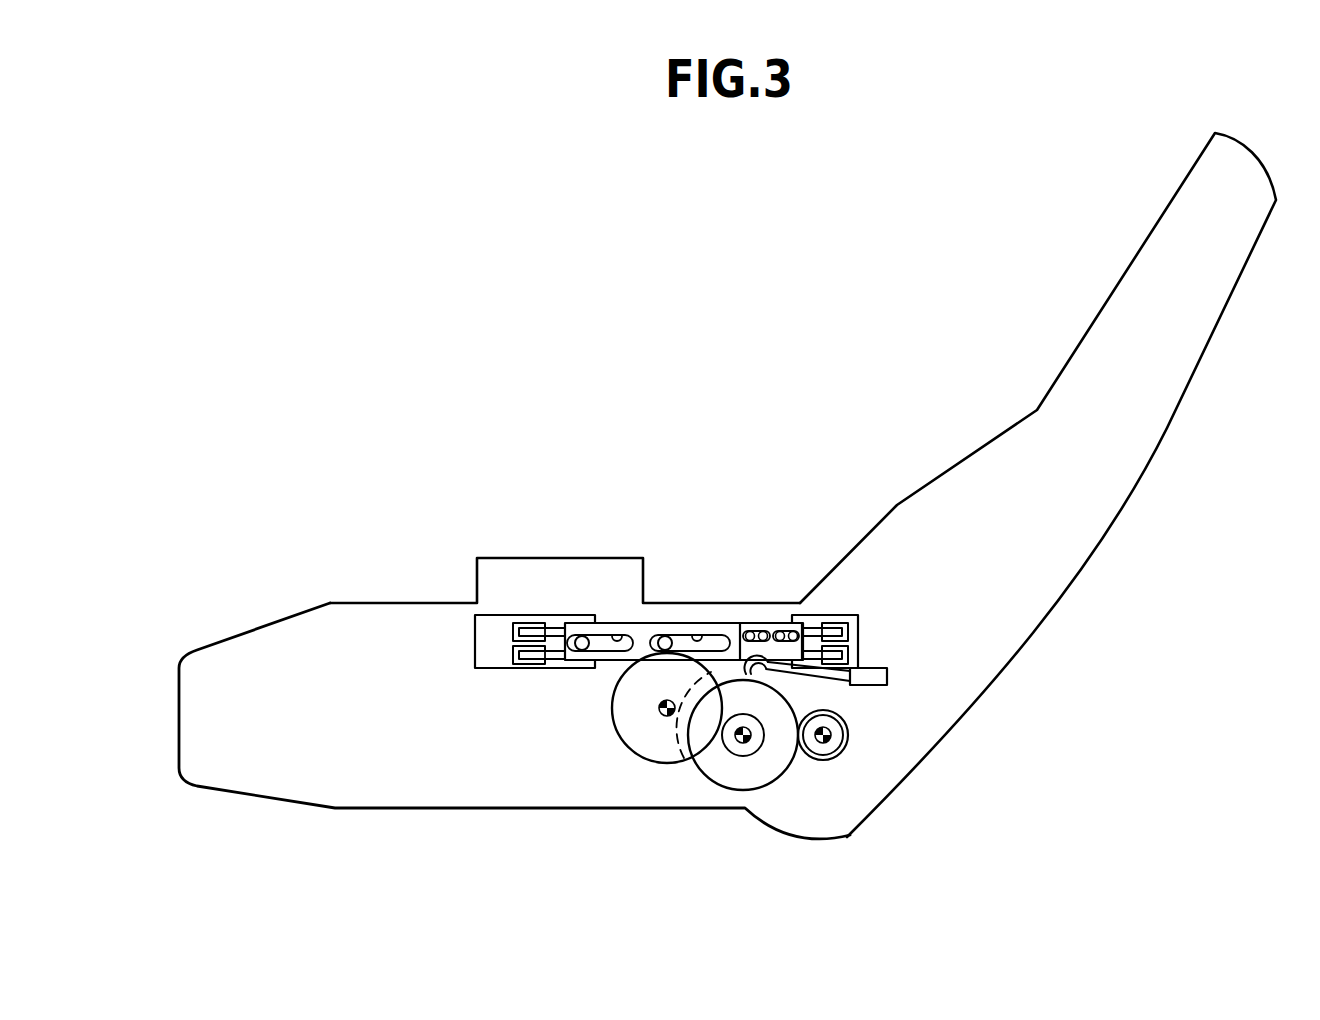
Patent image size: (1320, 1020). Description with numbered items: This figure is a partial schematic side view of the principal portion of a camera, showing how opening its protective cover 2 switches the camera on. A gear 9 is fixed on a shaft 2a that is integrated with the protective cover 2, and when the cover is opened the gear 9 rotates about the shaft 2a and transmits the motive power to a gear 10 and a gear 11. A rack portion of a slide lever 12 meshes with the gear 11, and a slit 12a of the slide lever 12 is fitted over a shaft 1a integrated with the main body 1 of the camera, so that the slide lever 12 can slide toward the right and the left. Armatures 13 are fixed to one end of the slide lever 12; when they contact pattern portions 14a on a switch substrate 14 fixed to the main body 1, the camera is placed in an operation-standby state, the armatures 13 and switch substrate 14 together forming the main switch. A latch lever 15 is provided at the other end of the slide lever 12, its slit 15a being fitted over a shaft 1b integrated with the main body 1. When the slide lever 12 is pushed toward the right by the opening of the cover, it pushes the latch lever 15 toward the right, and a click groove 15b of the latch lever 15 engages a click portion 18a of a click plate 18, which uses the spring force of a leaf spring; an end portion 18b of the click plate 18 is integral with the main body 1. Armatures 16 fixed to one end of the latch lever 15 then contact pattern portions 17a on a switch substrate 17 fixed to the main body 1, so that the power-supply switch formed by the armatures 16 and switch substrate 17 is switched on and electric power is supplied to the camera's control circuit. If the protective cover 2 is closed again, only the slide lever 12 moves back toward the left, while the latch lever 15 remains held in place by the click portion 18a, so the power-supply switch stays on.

The main body 1 is at (353, 795).
The shaft 1a is at (577, 622).
The shaft 1b is at (750, 627).
The protective cover 2 is at (1228, 313).
The shaft 2a is at (820, 758).
The gear 9 is at (830, 740).
The gear 10 is at (732, 785).
The gear 11 is at (632, 745).
The slide lever 12 is at (672, 627).
The slit 12a is at (622, 622).
The armatures 13 is at (557, 662).
The switch substrate 14 is at (488, 668).
The pattern portions 14a is at (527, 622).
The latch lever 15 is at (757, 627).
The slit 15a is at (767, 627).
The click groove 15b is at (693, 763).
The armatures 16 is at (818, 625).
The switch substrate 17 is at (863, 620).
The pattern portions 17a is at (862, 655).
The click plate 18 is at (840, 682).
The click portion 18a is at (772, 675).
The end portion 18b is at (887, 682).